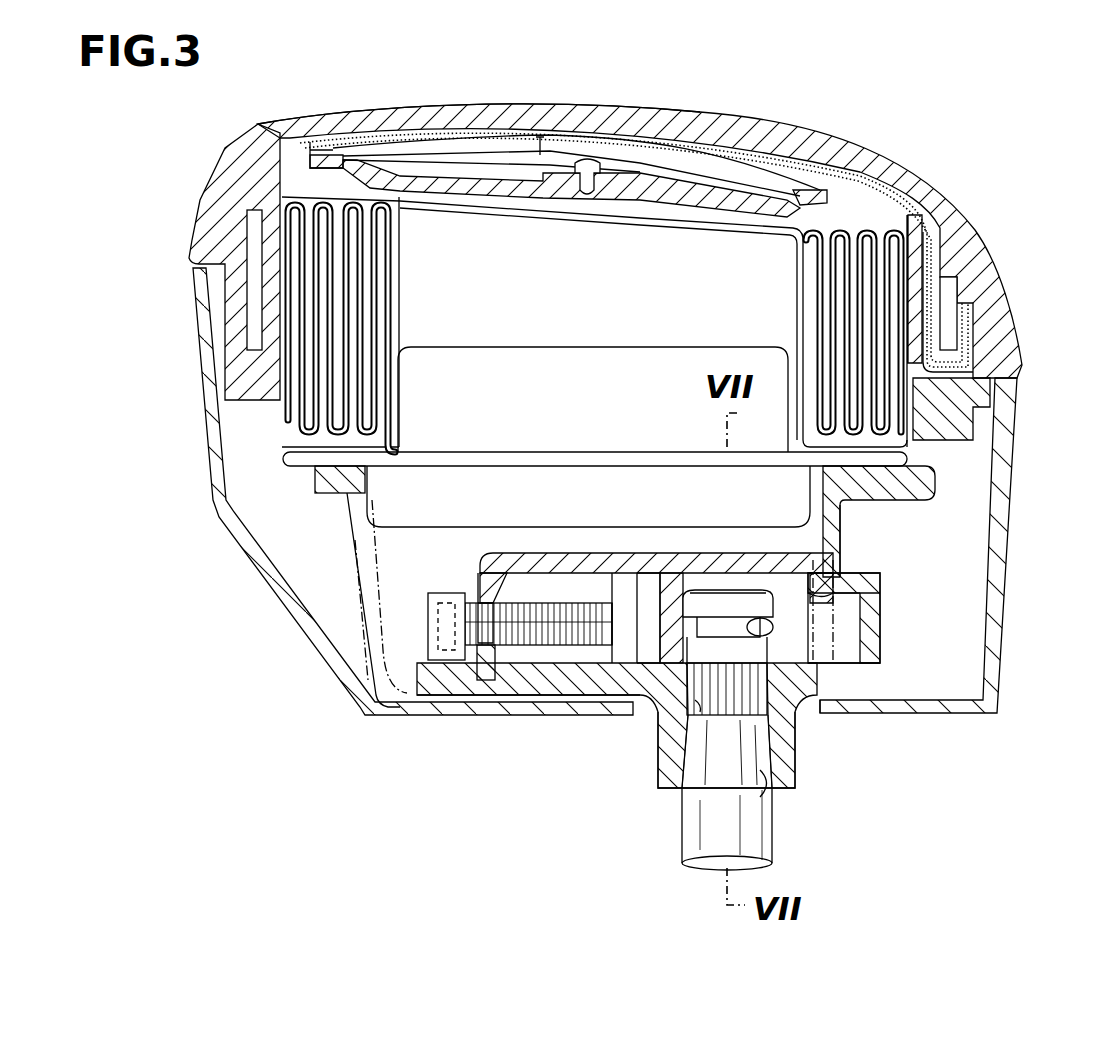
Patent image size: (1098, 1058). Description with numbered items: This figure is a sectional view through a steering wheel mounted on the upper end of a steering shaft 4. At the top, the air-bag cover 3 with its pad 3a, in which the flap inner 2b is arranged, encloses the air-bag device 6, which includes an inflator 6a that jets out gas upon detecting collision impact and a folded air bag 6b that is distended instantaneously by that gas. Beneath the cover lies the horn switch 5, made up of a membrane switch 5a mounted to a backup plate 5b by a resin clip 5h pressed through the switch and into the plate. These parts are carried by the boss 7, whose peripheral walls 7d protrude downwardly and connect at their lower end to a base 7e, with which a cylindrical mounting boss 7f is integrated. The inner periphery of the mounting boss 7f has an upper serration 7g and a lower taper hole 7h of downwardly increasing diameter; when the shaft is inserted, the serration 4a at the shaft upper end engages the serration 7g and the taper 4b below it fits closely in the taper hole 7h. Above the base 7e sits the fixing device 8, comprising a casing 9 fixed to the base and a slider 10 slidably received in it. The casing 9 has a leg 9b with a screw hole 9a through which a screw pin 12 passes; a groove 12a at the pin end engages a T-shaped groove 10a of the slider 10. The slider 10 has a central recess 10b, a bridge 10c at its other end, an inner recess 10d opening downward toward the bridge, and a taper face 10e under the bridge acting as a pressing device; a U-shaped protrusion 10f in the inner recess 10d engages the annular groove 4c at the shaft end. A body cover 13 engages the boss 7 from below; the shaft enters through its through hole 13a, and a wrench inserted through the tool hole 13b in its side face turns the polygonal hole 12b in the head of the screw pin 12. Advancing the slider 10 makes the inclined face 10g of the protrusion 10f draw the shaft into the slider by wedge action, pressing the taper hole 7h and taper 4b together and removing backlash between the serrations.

The air-bag cover 3 is at (786, 124).
The pad 3a is at (516, 108).
The flap inner 2b is at (672, 148).
The horn switch 5 is at (568, 124).
The membrane switch 5a is at (415, 148).
The backup plate 5b is at (472, 183).
The resin clip 5h is at (588, 160).
The air-bag device 6 is at (493, 328).
The inflator 6a is at (418, 375).
The air bag 6b is at (300, 413).
The boss 7 is at (927, 474).
The peripheral walls 7d is at (835, 528).
The base 7e is at (560, 700).
The mounting boss 7f is at (800, 766).
The serration 7g is at (698, 700).
The taper hole 7h is at (776, 790).
The fixing device 8 is at (616, 553).
The casing 9 is at (538, 569).
The screw hole 9a is at (480, 605).
The leg 9b is at (484, 577).
The slider 10 is at (873, 648).
The T-shaped groove 10a is at (650, 583).
The recess 10b is at (794, 608).
The bridge 10c is at (865, 578).
The inner recess 10d is at (800, 623).
The taper face 10e is at (880, 622).
The protrusion 10f is at (830, 655).
The inclined face 10g is at (756, 615).
The screw pin 12 is at (495, 645).
The groove 12a is at (627, 617).
The polygonal hole 12b is at (445, 642).
The body cover 13 is at (1003, 525).
The through hole 13a is at (818, 717).
The tool hole 13b is at (282, 610).
The steering shaft 4 is at (690, 838).
The serration 4a is at (697, 747).
The taper 4b is at (700, 763).
The annular groove 4c is at (717, 612).